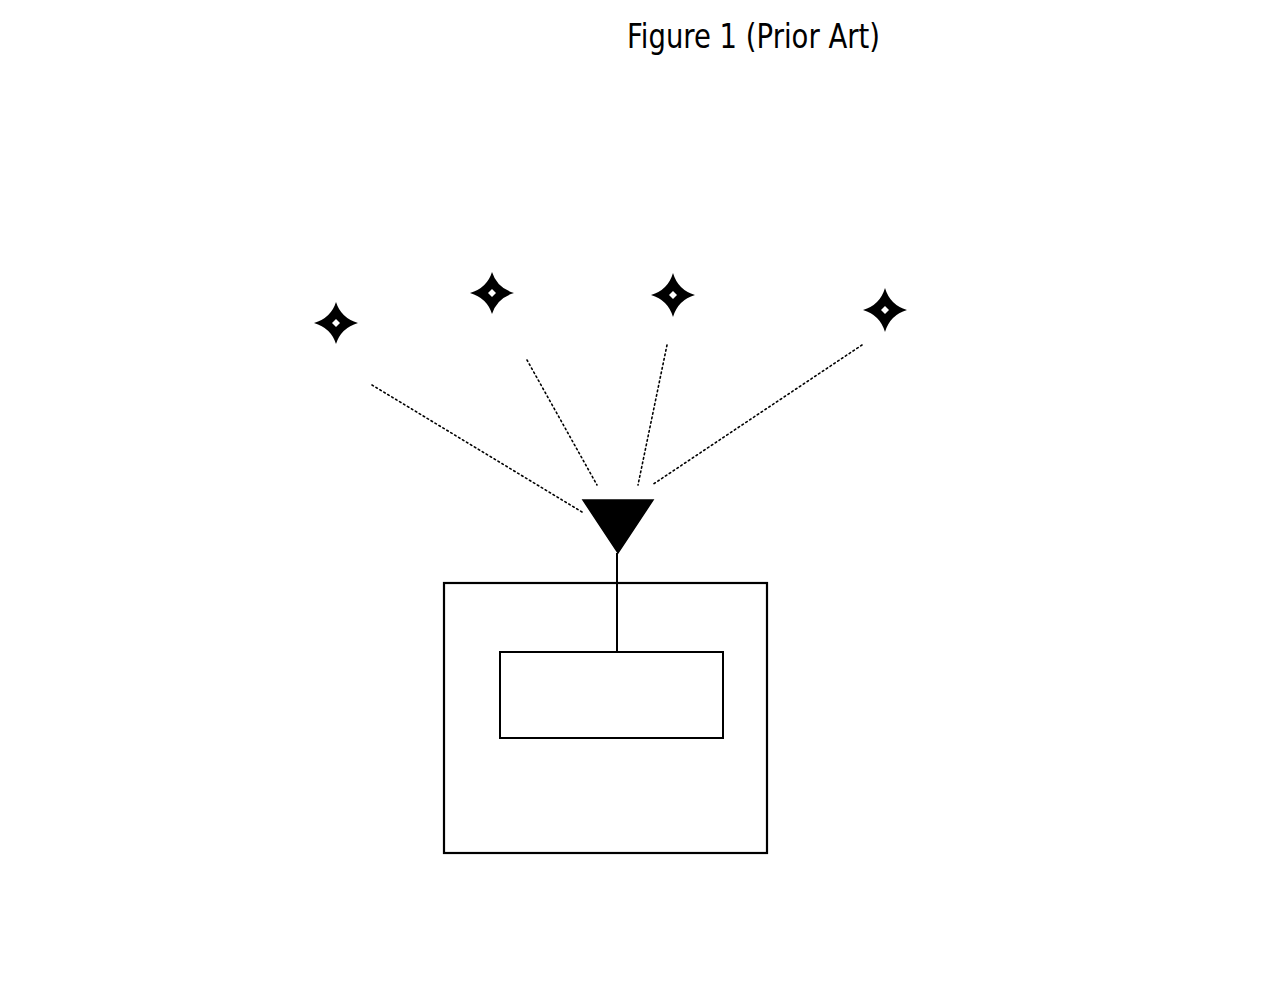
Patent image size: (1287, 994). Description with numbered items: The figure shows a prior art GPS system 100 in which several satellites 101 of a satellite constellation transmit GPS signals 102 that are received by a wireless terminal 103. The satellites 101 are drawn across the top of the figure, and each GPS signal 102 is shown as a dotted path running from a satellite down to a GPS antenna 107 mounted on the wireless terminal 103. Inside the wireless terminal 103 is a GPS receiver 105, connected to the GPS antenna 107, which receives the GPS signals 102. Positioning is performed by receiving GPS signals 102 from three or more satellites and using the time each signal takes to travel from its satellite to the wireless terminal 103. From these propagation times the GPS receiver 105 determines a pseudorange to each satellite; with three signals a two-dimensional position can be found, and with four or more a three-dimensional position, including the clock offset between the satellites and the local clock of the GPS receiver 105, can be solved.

The GPS system 100 is at (1237, 175).
The satellites 101 is at (331, 313).
The GPS signals 102 is at (446, 431).
The wireless terminal 103 is at (770, 744).
The GPS receiver 105 is at (625, 742).
The GPS antenna 107 is at (641, 527).